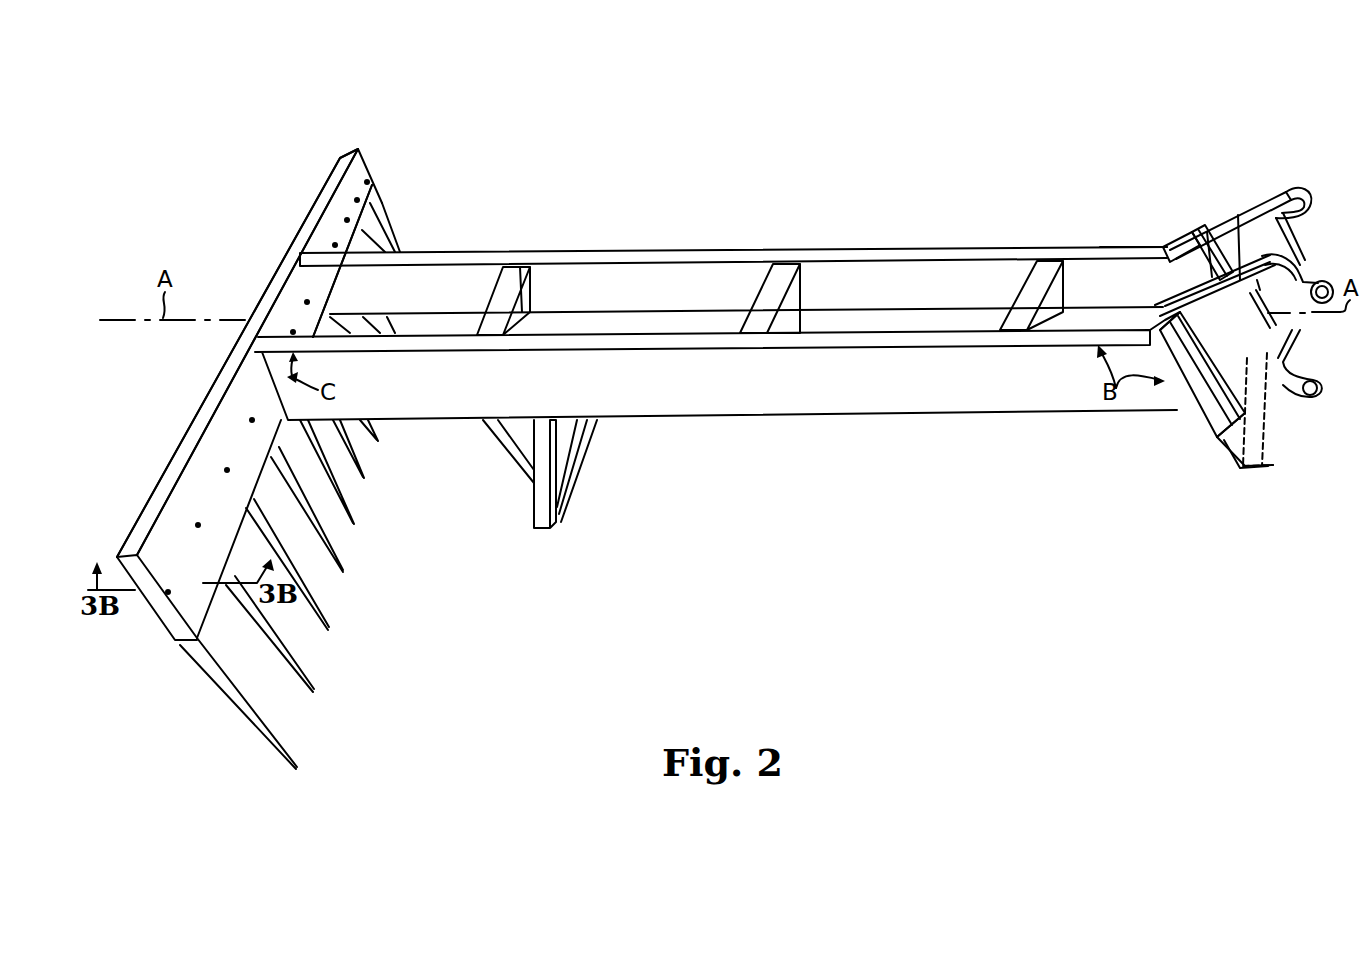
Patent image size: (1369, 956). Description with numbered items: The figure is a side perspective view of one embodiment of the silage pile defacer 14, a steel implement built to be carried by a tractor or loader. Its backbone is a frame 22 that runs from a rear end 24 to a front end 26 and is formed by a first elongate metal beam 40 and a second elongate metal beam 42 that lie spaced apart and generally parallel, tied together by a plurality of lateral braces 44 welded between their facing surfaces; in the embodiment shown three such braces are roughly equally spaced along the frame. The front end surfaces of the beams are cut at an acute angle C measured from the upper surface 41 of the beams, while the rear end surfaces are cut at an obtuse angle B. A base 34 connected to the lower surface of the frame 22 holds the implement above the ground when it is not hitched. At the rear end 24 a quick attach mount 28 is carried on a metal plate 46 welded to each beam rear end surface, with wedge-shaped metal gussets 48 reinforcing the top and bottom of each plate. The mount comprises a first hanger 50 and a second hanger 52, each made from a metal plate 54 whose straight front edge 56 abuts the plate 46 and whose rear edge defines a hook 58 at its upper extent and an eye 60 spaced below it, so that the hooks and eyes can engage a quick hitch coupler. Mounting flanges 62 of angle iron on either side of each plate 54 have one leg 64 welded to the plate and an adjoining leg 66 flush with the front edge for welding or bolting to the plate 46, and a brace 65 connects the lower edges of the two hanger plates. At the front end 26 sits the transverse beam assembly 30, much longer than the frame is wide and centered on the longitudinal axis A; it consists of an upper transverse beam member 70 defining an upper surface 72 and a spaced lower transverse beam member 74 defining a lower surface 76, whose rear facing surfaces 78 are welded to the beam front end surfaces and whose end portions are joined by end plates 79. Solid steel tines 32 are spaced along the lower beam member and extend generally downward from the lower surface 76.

The silage pile defacer 14 is at (966, 156).
The frame 22 is at (888, 250).
The rear end 24 is at (1160, 390).
The front end 26 is at (300, 282).
The quick attach mount 28 is at (1269, 195).
The transverse beam assembly 30 is at (360, 152).
The tines 32 is at (266, 735).
The base 34 is at (540, 497).
The first elongate metal beam 40 is at (876, 400).
The upper surface 41 is at (668, 335).
The second elongate metal beam 42 is at (1078, 252).
The lateral braces 44 is at (520, 270).
The metal plate 46 is at (1195, 252).
The wedge-shaped metal gussets 48 is at (1090, 345).
The first hanger 50 is at (1243, 470).
The second hanger 52 is at (1239, 220).
The metal plate 54 is at (1290, 200).
The front edge 56 is at (1195, 240).
The hook 58 is at (1300, 283).
The eye 60 is at (1310, 398).
The mounting flanges 62 is at (1245, 247).
The leg 64 is at (1188, 325).
The brace 65 is at (1288, 440).
The adjoining leg 66 is at (1200, 390).
The upper transverse beam member 70 is at (190, 493).
The upper surface 72 is at (198, 428).
The lower transverse beam member 74 is at (257, 483).
The lower surface 76 is at (283, 430).
The rear facing surfaces 78 is at (248, 395).
The end plates 79 is at (372, 178).